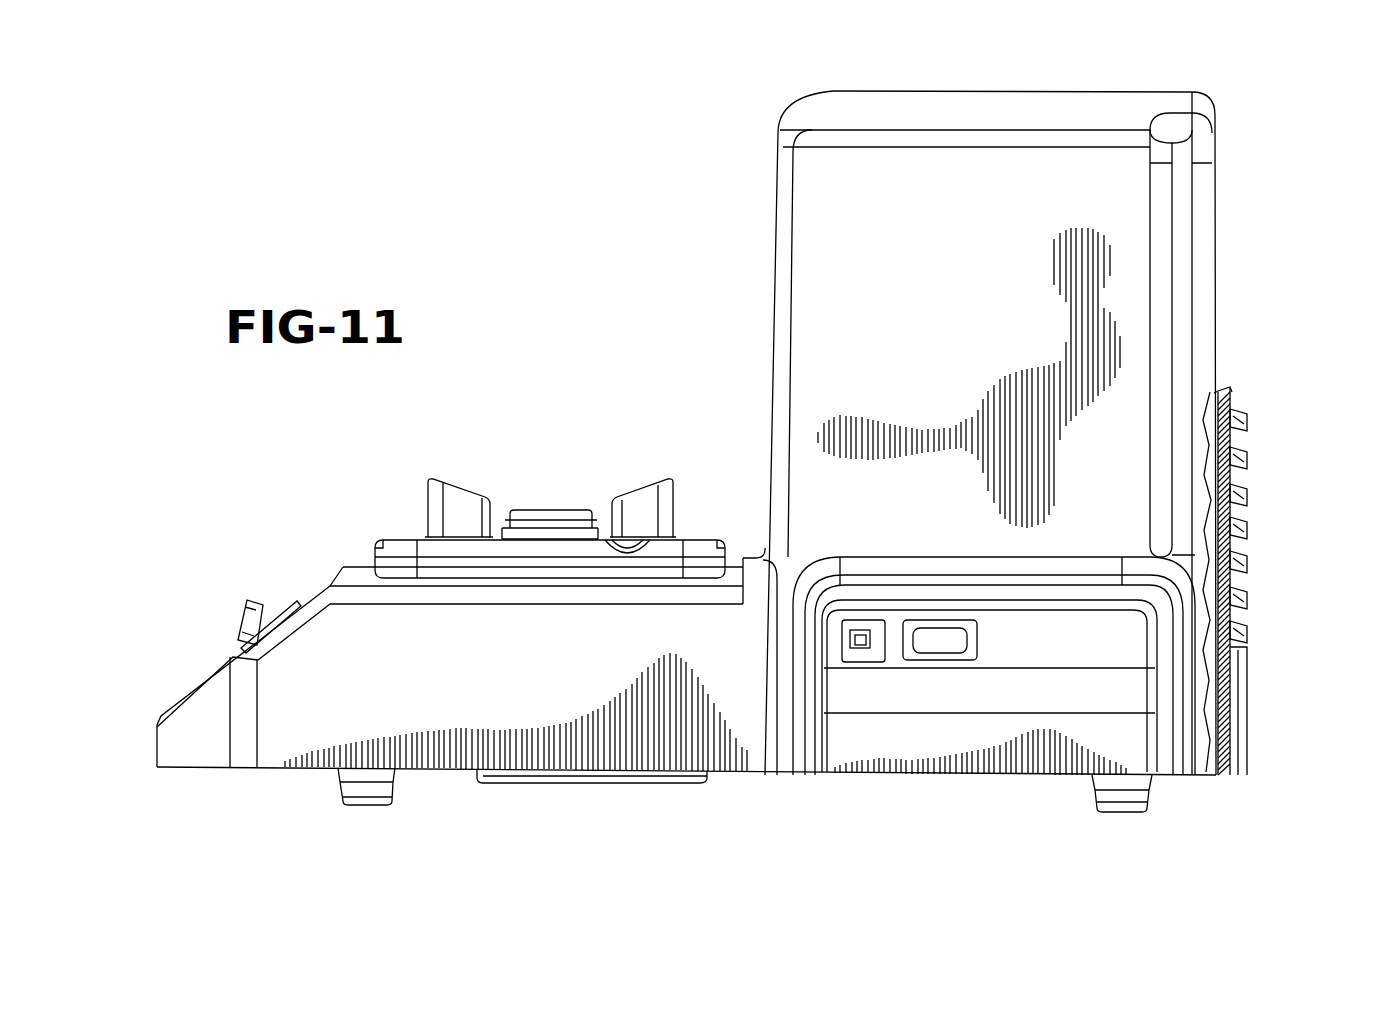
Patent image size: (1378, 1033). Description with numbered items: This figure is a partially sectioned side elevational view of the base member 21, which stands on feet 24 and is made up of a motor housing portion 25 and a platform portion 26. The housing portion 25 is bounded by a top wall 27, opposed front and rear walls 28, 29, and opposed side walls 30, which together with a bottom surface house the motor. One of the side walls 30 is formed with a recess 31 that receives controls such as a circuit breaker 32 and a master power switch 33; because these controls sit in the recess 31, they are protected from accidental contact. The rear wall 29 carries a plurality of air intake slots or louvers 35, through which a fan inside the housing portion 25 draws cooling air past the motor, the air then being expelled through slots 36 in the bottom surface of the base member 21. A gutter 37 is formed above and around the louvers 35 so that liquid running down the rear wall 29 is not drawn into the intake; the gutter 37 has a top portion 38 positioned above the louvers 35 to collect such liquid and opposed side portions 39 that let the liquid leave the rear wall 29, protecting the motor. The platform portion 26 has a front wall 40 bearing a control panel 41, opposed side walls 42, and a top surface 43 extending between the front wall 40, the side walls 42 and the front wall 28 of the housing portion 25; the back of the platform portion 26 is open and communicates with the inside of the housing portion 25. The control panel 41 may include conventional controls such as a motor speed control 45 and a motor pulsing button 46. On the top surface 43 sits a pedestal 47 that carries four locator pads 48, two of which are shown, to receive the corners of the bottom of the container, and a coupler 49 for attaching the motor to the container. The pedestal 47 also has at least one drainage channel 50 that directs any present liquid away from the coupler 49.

The base member 21 is at (1320, 148).
The feet 24 is at (355, 800).
The motor housing portion 25 is at (770, 210).
The platform portion 26 is at (431, 780).
The top wall 27 is at (970, 103).
The front wall 28 is at (768, 352).
The rear wall 29 is at (1226, 245).
The side walls 30 is at (865, 305).
The recess 31 is at (1043, 647).
The circuit breaker 32 is at (862, 650).
The master power switch 33 is at (935, 642).
The air intake slots or louvers 35 is at (1240, 456).
The slots 36 is at (598, 784).
The gutter 37 is at (1272, 652).
The top portion 38 is at (1224, 403).
The side portions 39 is at (1237, 745).
The front wall 40 is at (328, 585).
The control panel 41 is at (200, 683).
The side walls 42 is at (598, 675).
The top surface 43 is at (365, 575).
The motor speed control 45 is at (245, 608).
The motor pulsing button 46 is at (270, 603).
The pedestal 47 is at (575, 572).
The locator pads 48 is at (440, 513).
The coupler 49 is at (530, 515).
The drainage channel 50 is at (632, 545).